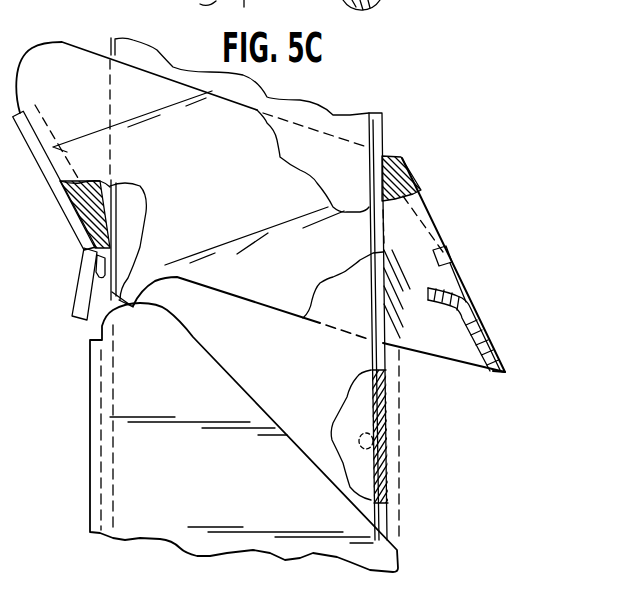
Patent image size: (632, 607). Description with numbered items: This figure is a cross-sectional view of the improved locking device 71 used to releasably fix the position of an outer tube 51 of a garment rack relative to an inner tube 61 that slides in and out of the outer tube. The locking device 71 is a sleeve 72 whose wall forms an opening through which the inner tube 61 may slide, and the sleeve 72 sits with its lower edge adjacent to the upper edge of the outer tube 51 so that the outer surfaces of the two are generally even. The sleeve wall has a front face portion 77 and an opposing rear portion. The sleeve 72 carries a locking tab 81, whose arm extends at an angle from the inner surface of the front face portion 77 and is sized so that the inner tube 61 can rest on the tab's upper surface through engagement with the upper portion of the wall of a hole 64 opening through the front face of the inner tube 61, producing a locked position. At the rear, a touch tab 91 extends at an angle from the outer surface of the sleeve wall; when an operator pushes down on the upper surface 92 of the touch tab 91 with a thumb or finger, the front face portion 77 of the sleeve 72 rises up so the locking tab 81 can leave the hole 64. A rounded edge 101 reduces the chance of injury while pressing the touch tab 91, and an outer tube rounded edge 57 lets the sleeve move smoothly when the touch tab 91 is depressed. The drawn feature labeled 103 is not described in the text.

The rounded edge 101 is at (33, 49).
The inner tube 61 is at (391, 132).
The sleeve 72 is at (408, 170).
The improved locking device 71 is at (431, 196).
The front face portion 77 is at (434, 219).
The locking tab 81 is at (460, 281).
The hinge pin 103 is at (95, 258).
The upper surface of the touch tab 92 is at (77, 285).
The touch tab 91 is at (70, 311).
The outer tube rounded edge 57 is at (100, 323).
The hole 64 is at (388, 449).
The outer tube 51 is at (404, 556).